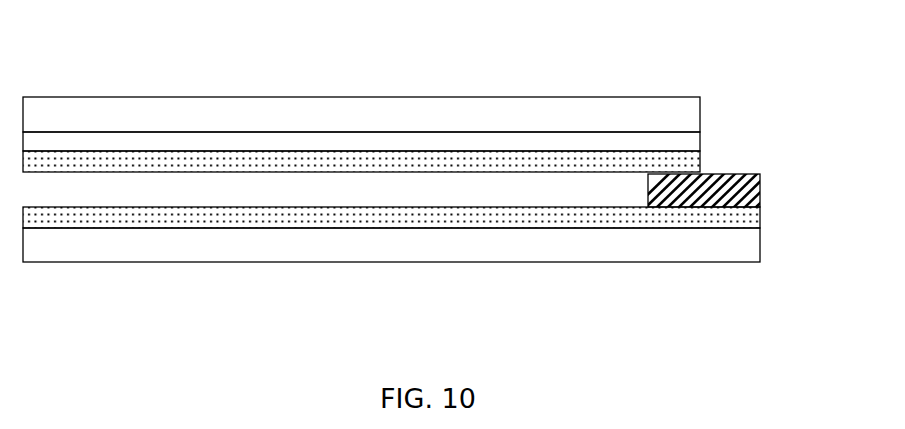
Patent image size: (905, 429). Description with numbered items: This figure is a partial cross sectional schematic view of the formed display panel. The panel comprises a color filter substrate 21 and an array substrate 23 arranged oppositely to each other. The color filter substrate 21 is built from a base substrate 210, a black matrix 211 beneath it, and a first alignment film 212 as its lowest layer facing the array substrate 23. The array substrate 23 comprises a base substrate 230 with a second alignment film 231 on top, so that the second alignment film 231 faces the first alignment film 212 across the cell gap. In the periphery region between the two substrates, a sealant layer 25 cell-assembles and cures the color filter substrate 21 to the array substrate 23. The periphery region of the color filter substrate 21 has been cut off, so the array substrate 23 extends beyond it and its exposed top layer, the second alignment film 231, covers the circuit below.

The color filter substrate 21 is at (361, 98).
The base substrate 210 is at (515, 110).
The black matrix 211 is at (583, 143).
The first alignment film 212 is at (640, 160).
The sealant layer 25 is at (725, 183).
The array substrate 23 is at (412, 240).
The second alignment film 231 is at (745, 217).
The base substrate 230 is at (497, 245).